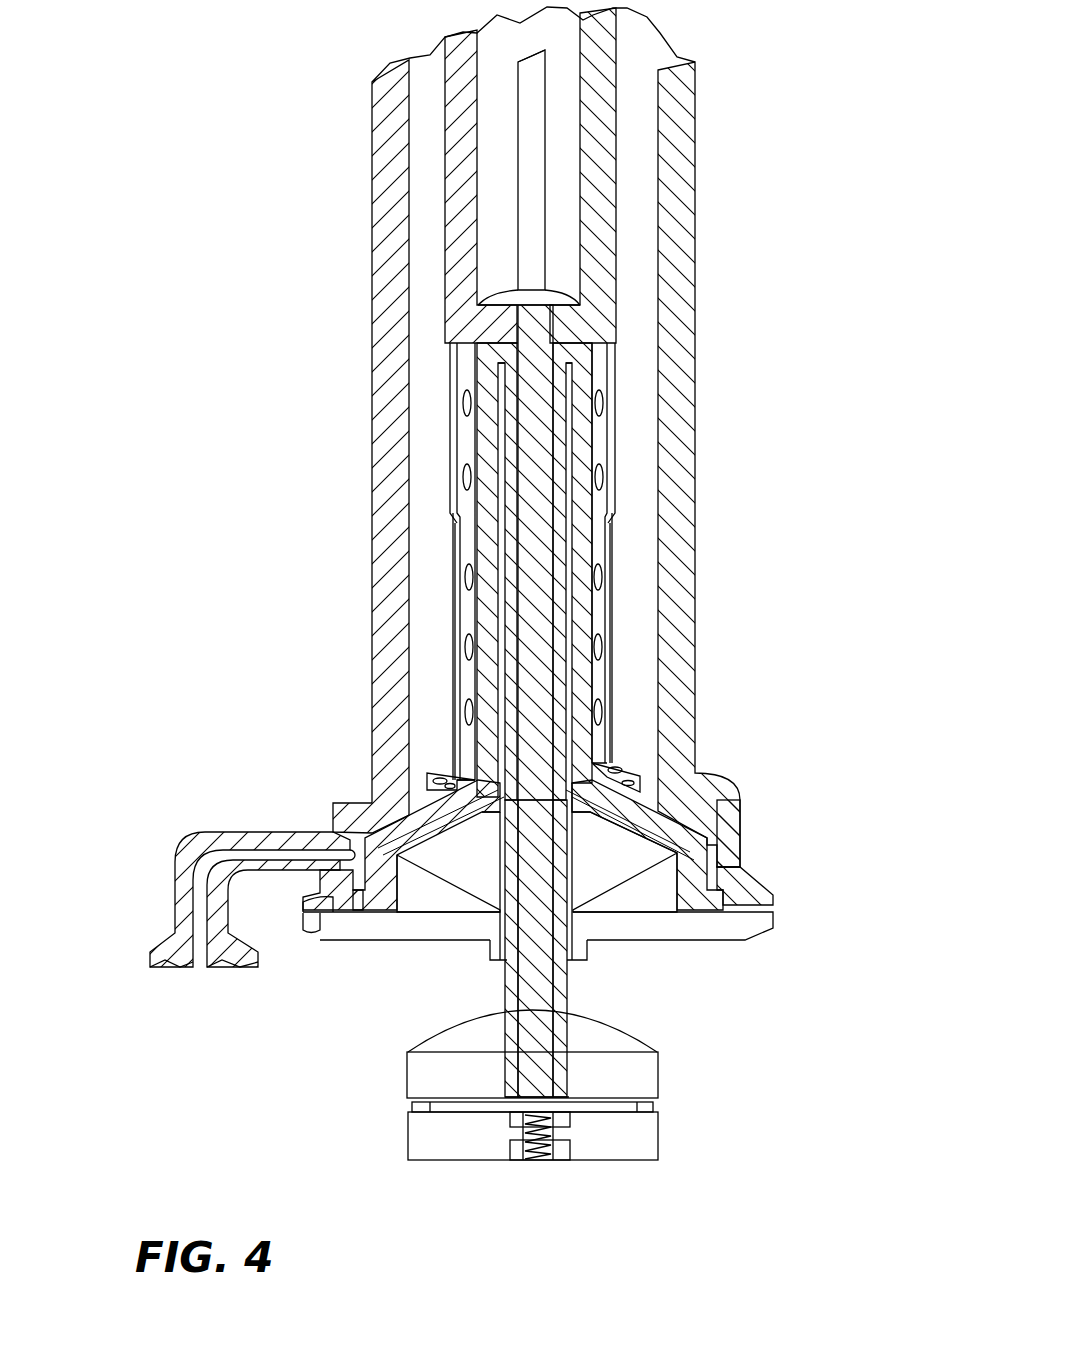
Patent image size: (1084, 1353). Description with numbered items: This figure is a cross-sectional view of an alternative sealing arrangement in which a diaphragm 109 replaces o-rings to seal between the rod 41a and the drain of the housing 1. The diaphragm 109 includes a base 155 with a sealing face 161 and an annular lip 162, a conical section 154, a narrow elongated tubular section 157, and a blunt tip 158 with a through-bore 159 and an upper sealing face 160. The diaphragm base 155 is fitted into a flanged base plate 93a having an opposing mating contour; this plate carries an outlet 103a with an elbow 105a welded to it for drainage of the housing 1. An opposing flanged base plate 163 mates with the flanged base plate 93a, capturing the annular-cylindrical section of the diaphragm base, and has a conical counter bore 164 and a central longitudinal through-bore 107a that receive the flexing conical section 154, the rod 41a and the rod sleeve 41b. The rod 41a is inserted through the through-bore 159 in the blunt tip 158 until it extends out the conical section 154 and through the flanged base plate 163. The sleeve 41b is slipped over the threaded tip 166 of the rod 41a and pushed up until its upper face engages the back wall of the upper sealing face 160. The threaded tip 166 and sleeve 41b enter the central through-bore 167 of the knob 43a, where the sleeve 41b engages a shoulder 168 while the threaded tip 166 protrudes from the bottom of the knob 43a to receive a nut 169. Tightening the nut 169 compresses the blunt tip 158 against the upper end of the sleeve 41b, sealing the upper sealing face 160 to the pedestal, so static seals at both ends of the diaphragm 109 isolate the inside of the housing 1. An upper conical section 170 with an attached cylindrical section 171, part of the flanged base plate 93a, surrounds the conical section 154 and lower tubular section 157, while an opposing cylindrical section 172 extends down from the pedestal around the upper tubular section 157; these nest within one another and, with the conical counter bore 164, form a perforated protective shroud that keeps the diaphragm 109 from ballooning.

The housing 1 is at (814, 446).
The rod 41a is at (530, 993).
The rod sleeve 41b is at (560, 463).
The knob 43a is at (660, 1142).
The flanged base plate 93a is at (320, 935).
The outlet 103a is at (340, 853).
The elbow 105a is at (217, 859).
The central longitudinal through-bore 107a is at (575, 962).
The diaphragm 109 is at (593, 428).
The conical section 154 is at (720, 797).
The base 155 is at (713, 870).
The narrow elongated tubular section 157 is at (597, 703).
The blunt tip 158 is at (587, 353).
The through-bore 159 is at (555, 323).
The upper sealing face 160 is at (443, 332).
The sealing face 161 is at (740, 850).
The annular lip 162 is at (770, 897).
The flanged base plate 163 is at (410, 942).
The conical counter bore 164 is at (617, 873).
The threaded tip 166 is at (530, 1160).
The central through-bore 167 is at (573, 1160).
The shoulder 168 is at (527, 1127).
The nut 169 is at (553, 1160).
The upper conical section 170 is at (620, 783).
The cylindrical section 171 is at (610, 627).
The opposing cylindrical section 172 is at (612, 497).